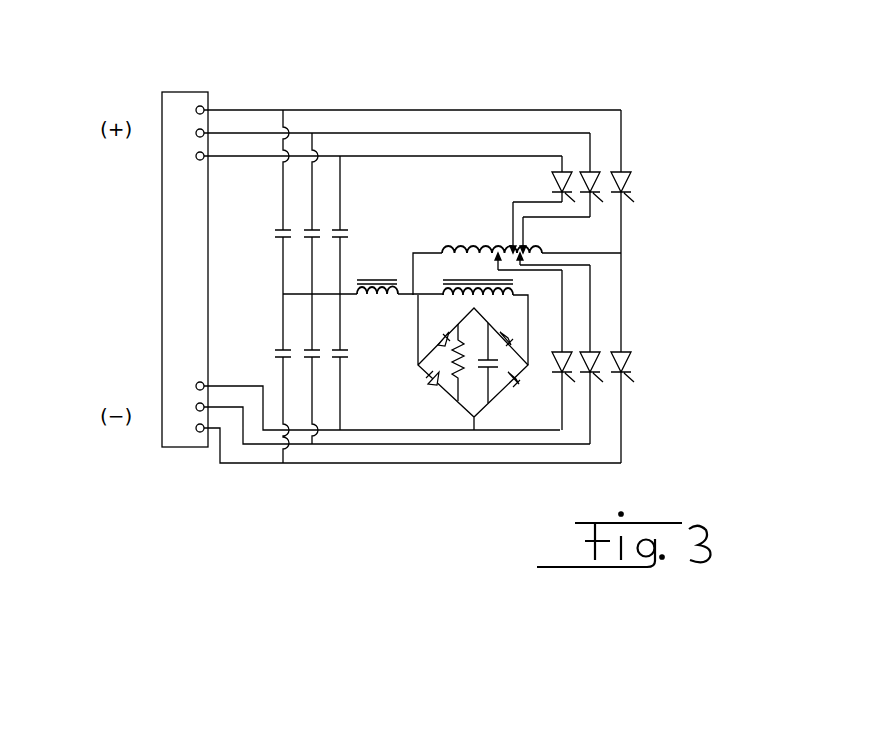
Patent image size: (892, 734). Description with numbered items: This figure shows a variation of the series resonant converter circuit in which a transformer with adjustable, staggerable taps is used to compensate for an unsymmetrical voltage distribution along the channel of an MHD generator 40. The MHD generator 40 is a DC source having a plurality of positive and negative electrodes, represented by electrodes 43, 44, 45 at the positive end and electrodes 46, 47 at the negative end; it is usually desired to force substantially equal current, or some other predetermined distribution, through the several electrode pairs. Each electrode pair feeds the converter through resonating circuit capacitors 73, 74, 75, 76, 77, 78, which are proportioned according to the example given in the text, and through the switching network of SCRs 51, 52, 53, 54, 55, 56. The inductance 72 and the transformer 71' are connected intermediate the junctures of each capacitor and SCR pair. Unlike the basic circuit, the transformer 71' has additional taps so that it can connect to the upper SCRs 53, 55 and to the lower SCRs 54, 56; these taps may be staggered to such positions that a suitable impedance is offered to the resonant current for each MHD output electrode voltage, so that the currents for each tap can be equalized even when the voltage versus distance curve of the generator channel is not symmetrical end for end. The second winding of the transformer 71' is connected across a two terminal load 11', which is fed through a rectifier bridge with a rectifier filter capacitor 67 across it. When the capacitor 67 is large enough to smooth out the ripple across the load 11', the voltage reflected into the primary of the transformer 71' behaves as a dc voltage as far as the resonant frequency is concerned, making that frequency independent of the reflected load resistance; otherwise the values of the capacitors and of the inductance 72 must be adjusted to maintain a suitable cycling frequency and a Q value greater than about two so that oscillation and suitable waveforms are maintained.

The MHD generator 40 is at (162, 282).
The electrode 43 is at (196, 110).
The electrode 44 is at (196, 133).
The electrode 45 is at (196, 156).
The electrode 46 is at (196, 409).
The electrode 47 is at (196, 430).
The resonating circuit capacitor 73 is at (276, 230).
The resonating circuit capacitor 74 is at (309, 229).
The resonating circuit capacitor 75 is at (344, 229).
The resonating circuit capacitor 76 is at (276, 350).
The resonating circuit capacitor 77 is at (309, 349).
The resonating circuit capacitor 78 is at (344, 349).
The inductance 72 is at (388, 282).
The transformer 71' is at (517, 283).
The SCR 55 is at (556, 173).
The SCR 53 is at (598, 171).
The SCR 51 is at (628, 172).
The SCR 56 is at (565, 352).
The SCR 54 is at (597, 366).
The SCR 52 is at (620, 352).
The two terminal load 11' is at (460, 362).
The rectifier filter capacitor 67 is at (492, 369).